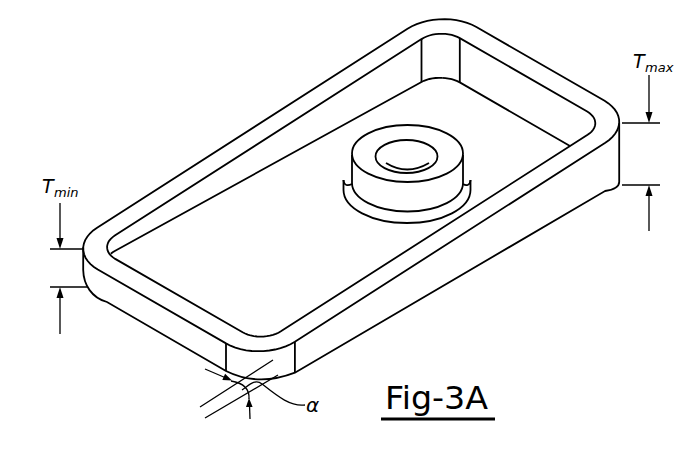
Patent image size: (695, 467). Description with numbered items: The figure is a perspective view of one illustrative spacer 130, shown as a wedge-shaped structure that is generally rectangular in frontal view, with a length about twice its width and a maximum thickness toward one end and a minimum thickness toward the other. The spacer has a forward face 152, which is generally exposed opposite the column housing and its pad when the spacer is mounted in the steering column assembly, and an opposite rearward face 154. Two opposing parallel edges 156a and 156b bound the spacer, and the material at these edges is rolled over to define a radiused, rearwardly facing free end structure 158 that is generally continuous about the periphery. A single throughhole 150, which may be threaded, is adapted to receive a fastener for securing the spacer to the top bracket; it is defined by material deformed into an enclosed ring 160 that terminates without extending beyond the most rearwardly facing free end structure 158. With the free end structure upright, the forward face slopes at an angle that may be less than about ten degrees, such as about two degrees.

The spacer 130 is at (510, 323).
The throughhole 150 is at (394, 152).
The forward face 152 is at (427, 294).
The rearward face 154 is at (238, 289).
The edge 156a is at (256, 161).
The edge 156b is at (521, 94).
The free end structure 158 is at (181, 181).
The ring 160 is at (383, 190).